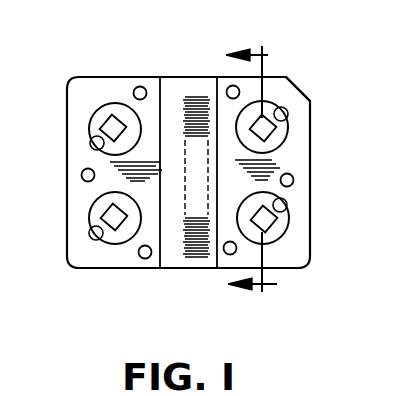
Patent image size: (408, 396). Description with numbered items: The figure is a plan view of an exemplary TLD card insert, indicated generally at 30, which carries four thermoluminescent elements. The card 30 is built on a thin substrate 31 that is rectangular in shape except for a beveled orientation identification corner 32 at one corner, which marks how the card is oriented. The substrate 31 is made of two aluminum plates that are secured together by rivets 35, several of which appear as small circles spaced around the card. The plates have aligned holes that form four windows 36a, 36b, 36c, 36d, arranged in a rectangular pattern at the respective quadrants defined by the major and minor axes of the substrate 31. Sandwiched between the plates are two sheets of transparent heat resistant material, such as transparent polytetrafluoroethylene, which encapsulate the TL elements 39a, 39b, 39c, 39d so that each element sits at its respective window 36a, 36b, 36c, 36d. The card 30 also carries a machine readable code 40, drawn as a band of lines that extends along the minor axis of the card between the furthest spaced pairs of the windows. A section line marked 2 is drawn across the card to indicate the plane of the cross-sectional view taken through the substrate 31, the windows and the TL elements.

The TLD card 30 is at (122, 78).
The substrate 31 is at (152, 270).
The beveled orientation identification corner 32 is at (303, 88).
The rivets 35 is at (143, 86).
The window 36a is at (104, 226).
The window 36b is at (271, 222).
The window 36c is at (270, 130).
The window 36d is at (101, 130).
The TL element 39a is at (122, 245).
The TL element 39b is at (296, 258).
The TL element 39c is at (283, 143).
The TL element 39d is at (91, 121).
The machine readable code 40 is at (196, 96).
The section line 2- 2 is at (251, 174).